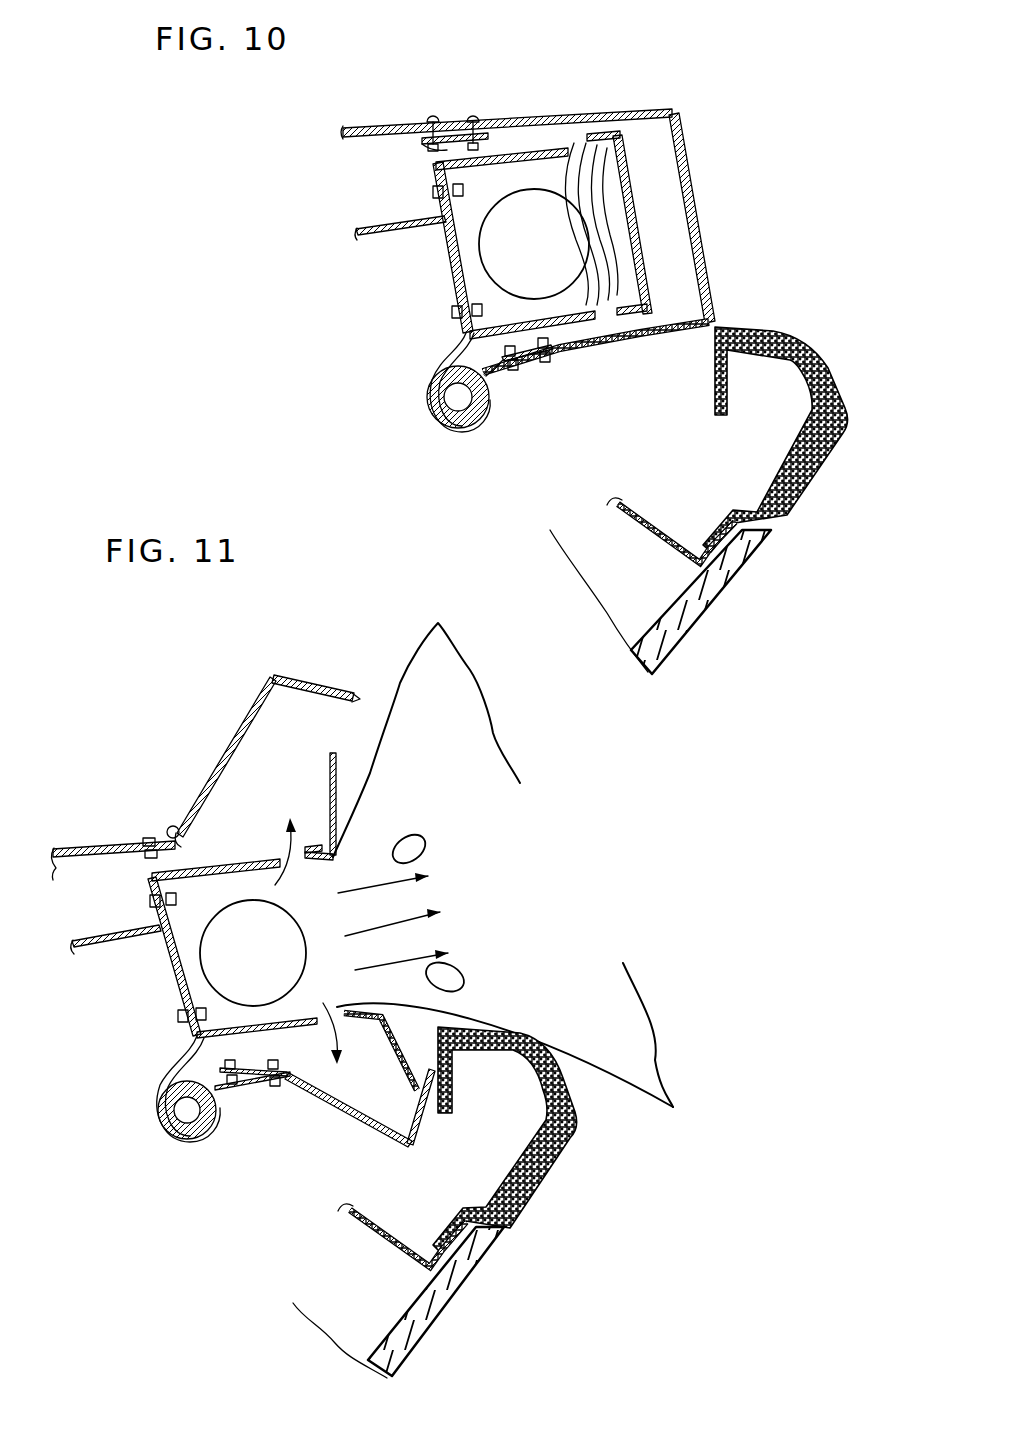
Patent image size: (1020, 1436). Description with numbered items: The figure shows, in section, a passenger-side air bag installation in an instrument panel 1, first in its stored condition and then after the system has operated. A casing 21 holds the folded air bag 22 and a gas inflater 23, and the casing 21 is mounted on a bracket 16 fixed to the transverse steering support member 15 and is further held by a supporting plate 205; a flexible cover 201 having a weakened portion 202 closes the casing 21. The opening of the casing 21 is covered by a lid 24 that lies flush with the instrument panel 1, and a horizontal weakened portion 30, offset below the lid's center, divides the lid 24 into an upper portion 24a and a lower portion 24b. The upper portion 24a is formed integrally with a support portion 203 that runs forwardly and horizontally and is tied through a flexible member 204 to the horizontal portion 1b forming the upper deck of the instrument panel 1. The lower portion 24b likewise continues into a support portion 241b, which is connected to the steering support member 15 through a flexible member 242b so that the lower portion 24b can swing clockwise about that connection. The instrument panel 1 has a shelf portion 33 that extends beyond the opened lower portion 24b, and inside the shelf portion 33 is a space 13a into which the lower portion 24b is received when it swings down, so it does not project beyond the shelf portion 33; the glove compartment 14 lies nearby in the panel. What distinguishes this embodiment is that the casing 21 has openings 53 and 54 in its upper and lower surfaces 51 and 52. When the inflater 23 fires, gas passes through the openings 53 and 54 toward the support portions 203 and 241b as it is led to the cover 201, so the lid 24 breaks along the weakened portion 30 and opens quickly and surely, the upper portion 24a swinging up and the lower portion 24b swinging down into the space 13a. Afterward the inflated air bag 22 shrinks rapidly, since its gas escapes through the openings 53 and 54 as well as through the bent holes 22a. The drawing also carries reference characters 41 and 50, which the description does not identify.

In FIG. 10, the instrument panel 1 is at (843, 396).
In FIG. 11, the instrument panel 1 is at (573, 1137).
In FIG. 10, the horizontal portion of the instrument panel 1b is at (391, 128).
In FIG. 11, the horizontal portion of the instrument panel 1b is at (90, 848).
In FIG. 10, the glove compartment 14 is at (723, 603).
In FIG. 11, the glove compartment 14 is at (423, 1333).
In FIG. 10, the space 13a is at (683, 478).
In FIG. 11, the space 13a is at (401, 1186).
In FIG. 10, the steering support member 15 is at (443, 427).
In FIG. 11, the steering support member 15 is at (183, 1138).
In FIG. 10, the bracket 16 is at (450, 365).
In FIG. 11, the bracket 16 is at (177, 1073).
In FIG. 10, the casing 21 is at (520, 150).
In FIG. 11, the casing 21 is at (212, 867).
In FIG. 10, the air bag 22 is at (627, 112).
In FIG. 11, the air bag 22 is at (410, 657).
In FIG. 11, the bent holes 22a is at (428, 842).
In FIG. 10, the gas inflater 23 is at (485, 262).
In FIG. 11, the gas inflater 23 is at (337, 893).
In FIG. 10, the lid 24 is at (646, 242).
In FIG. 10, the upper portion of the lid 24a is at (681, 122).
In FIG. 11, the upper portion of the lid 24a is at (317, 683).
In FIG. 10, the lower portion of the lid 24b is at (704, 260).
In FIG. 11, the lower portion of the lid 24b is at (425, 1115).
In FIG. 10, the weakened portion 30 is at (693, 222).
In FIG. 10, the shelf portion 33 is at (770, 330).
In FIG. 11, the shelf portion 33 is at (500, 1035).
In FIG. 11, the deflector plate 41 is at (396, 1062).
In FIG. 10, the air inlet flow 50 is at (537, 136).
In FIG. 10, the upper surface of the casing 51 is at (457, 232).
In FIG. 11, the upper surface of the casing 51 is at (230, 868).
In FIG. 10, the lower surface of the casing 52 is at (497, 330).
In FIG. 11, the lower surface of the casing 52 is at (290, 1022).
In FIG. 10, the opening 53 is at (585, 150).
In FIG. 11, the opening 53 is at (280, 847).
In FIG. 10, the opening 54 is at (603, 318).
In FIG. 11, the opening 54 is at (323, 1003).
In FIG. 10, the flexible cover 201 is at (627, 173).
In FIG. 11, the flexible cover 201 is at (333, 780).
In FIG. 10, the weakened portion of the cover 202 is at (636, 225).
In FIG. 10, the support portion 203 is at (560, 128).
In FIG. 11, the support portion 203 is at (237, 733).
In FIG. 10, the flexible member 204 is at (457, 143).
In FIG. 11, the flexible member 204 is at (170, 840).
In FIG. 10, the supporting plate 205 is at (383, 228).
In FIG. 11, the supporting plate 205 is at (110, 930).
In FIG. 10, the support portion 241b is at (640, 340).
In FIG. 11, the support portion 241b is at (322, 1096).
In FIG. 10, the flexible member 242b is at (537, 357).
In FIG. 11, the flexible member 242b is at (253, 1075).